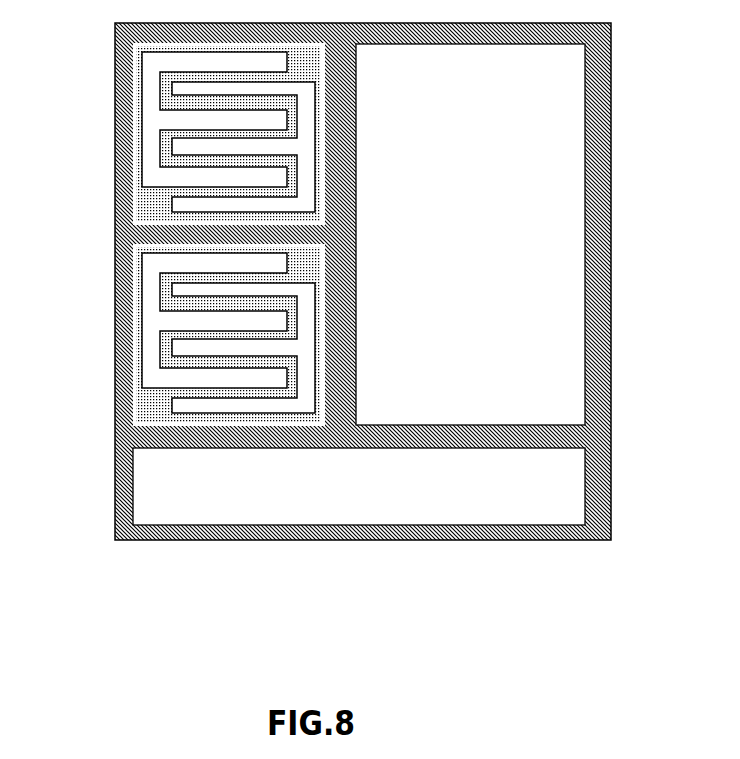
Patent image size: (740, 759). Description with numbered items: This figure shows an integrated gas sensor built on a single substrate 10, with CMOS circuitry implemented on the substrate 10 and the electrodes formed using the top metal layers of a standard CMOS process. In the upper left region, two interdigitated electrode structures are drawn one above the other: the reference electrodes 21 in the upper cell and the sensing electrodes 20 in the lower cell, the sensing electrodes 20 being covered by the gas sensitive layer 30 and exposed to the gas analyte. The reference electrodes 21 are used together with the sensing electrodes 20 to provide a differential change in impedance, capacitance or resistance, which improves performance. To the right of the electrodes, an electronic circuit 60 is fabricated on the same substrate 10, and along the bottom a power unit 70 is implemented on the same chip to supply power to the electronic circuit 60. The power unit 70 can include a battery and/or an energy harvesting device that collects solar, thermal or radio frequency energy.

The substrate 10 is at (612, 73).
The sensing electrodes 20 is at (148, 287).
The reference electrodes 21 is at (147, 113).
The gas sensitive layer 30 is at (147, 413).
The electronic circuit 60 is at (470, 234).
The power unit 70 is at (359, 486).